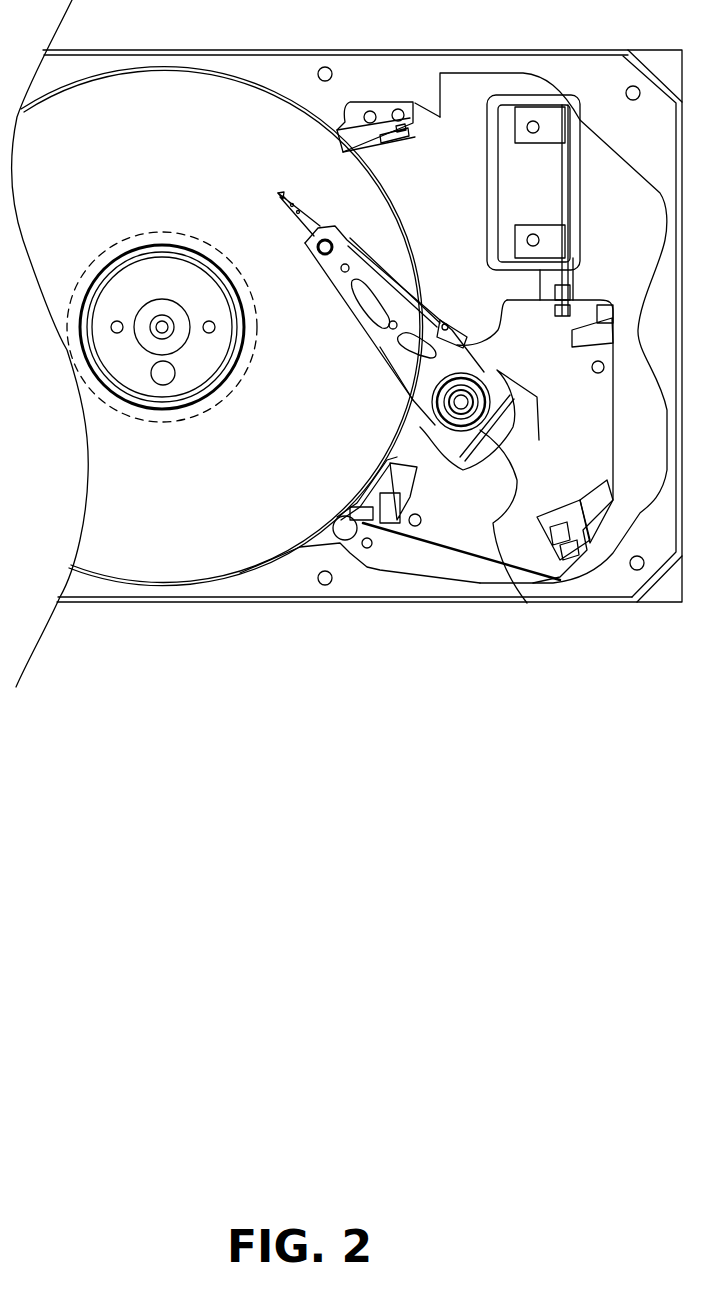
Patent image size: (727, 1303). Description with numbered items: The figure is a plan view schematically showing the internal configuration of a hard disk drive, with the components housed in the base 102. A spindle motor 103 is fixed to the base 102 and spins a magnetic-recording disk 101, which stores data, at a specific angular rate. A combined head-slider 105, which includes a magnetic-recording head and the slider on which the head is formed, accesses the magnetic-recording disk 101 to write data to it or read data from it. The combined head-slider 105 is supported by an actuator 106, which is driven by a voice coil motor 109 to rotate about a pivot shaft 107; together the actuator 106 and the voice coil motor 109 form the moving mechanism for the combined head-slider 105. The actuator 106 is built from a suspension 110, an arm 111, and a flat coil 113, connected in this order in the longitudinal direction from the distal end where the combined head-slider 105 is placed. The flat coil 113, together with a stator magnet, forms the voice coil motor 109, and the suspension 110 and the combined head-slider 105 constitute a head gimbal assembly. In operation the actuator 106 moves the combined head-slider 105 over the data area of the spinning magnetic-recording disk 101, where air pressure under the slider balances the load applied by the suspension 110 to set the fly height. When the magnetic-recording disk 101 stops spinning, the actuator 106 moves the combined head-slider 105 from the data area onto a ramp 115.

The magnetic-recording disk 101 is at (398, 206).
The base 102 is at (211, 607).
The spindle motor 103 is at (143, 422).
The combined head-slider 105 is at (285, 200).
The actuator 106 is at (333, 303).
The pivot shaft 107 is at (455, 406).
The voice coil motor 109 is at (406, 562).
The suspension 110 is at (307, 243).
The arm 111 is at (383, 347).
The flat coil 113 is at (495, 525).
The ramp 115 is at (337, 137).